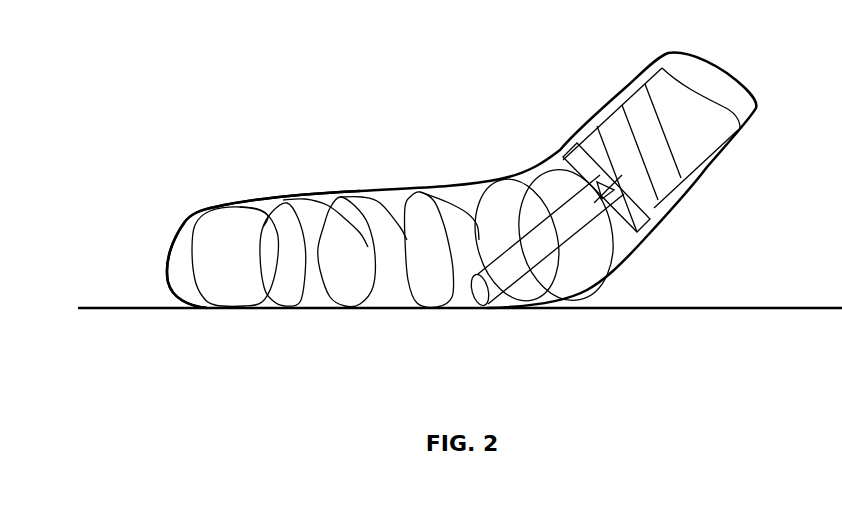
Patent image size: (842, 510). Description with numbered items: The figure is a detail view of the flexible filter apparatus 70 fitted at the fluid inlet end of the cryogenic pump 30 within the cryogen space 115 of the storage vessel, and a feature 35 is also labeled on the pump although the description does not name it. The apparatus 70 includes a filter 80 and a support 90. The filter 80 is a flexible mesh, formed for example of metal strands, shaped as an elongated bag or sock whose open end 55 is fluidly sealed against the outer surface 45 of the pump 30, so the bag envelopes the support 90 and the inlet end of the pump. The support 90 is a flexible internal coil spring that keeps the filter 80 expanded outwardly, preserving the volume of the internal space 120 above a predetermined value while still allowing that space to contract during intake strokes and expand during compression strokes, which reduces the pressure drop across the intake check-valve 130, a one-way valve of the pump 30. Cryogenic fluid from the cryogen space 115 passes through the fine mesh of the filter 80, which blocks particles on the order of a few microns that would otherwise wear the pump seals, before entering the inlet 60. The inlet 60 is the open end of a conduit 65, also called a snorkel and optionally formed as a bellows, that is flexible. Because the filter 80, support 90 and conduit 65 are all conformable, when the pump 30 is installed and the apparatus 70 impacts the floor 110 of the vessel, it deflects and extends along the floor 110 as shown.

The cryogenic pump 30 is at (640, 78).
The leg band 35 is at (645, 107).
The outer surface 45 is at (687, 163).
The open end 55 is at (727, 71).
The inlet 60 is at (478, 298).
The conduit 65 is at (553, 272).
The flexible filter apparatus 70 is at (192, 215).
The filter 80 is at (253, 198).
The support 90 is at (413, 226).
The floor 110 is at (127, 307).
The cryogen space 115 is at (127, 248).
The internal space 120 is at (208, 273).
The intake check-valve 130 is at (600, 177).